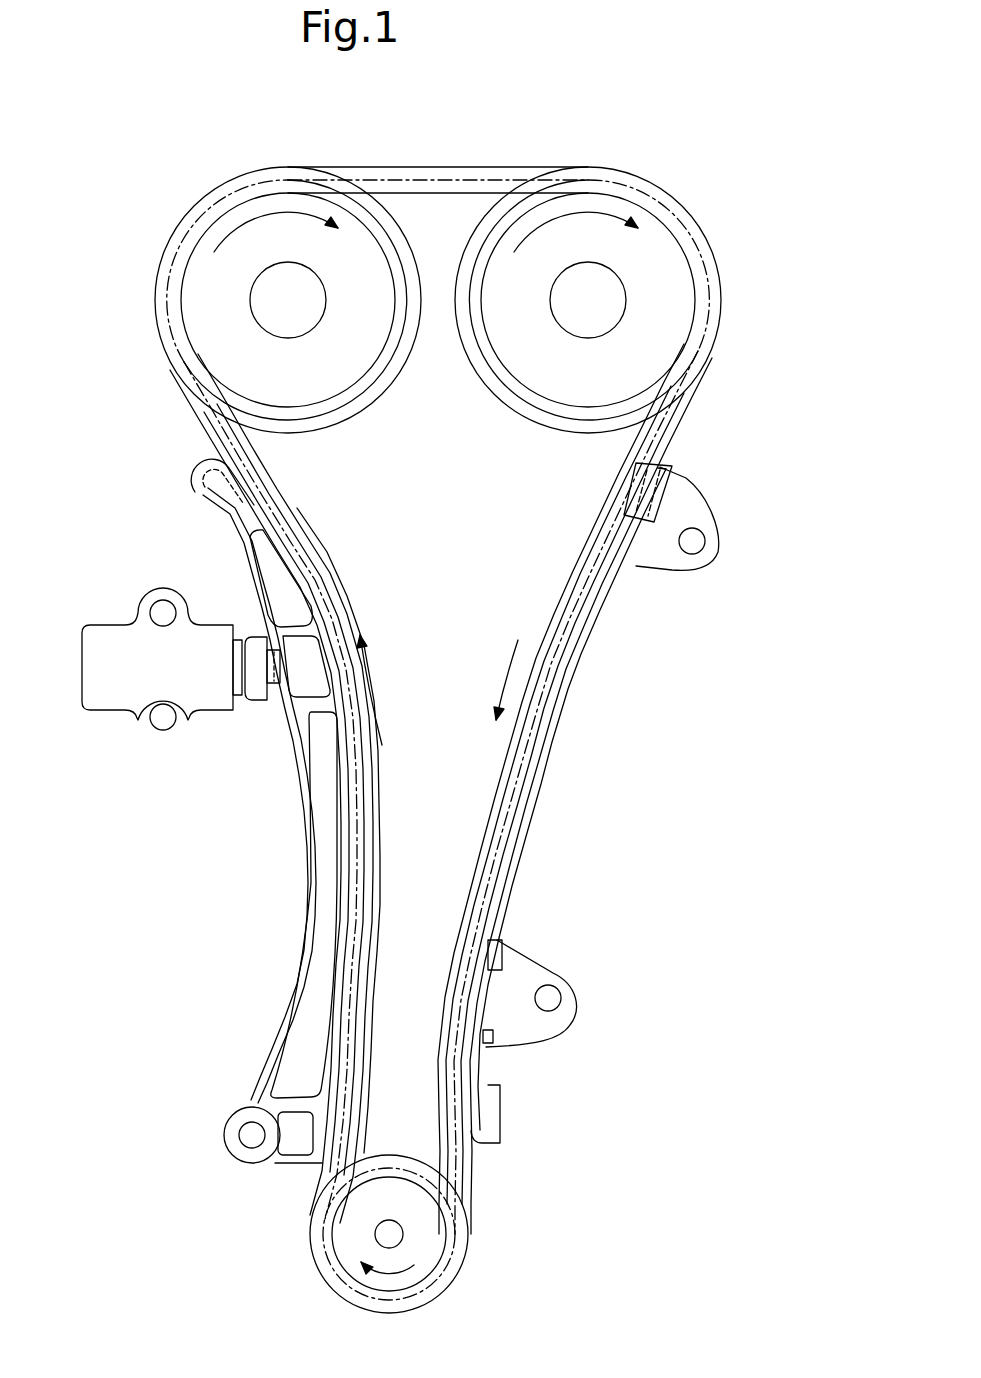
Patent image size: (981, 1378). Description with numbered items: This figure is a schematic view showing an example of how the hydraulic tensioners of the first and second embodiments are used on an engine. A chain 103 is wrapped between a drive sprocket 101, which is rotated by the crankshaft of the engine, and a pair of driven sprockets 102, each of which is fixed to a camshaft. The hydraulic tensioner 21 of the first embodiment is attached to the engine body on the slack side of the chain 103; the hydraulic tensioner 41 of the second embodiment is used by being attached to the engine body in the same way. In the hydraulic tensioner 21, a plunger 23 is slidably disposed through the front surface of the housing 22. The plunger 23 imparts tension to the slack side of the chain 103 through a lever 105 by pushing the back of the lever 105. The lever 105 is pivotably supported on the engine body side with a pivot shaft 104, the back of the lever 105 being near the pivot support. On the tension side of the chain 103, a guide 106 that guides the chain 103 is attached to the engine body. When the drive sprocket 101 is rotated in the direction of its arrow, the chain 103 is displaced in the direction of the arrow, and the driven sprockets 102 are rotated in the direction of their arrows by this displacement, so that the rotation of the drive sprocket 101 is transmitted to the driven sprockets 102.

The drive sprocket 101 is at (435, 1248).
The driven sprockets 102 is at (317, 393).
The chain 103 is at (461, 165).
The pivot shaft 104 is at (250, 1140).
The lever 105 is at (310, 882).
The guide 106 is at (538, 832).
The hydraulic tensioner 21 is at (155, 668).
The hydraulic tensioner 41 is at (155, 668).
The housing 22 is at (105, 700).
The plunger 23 is at (247, 700).